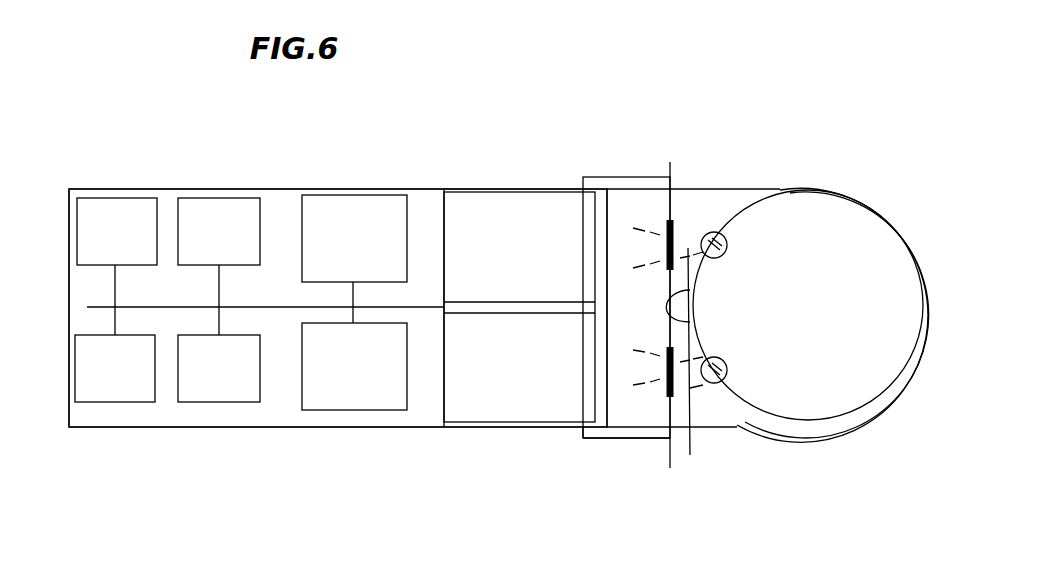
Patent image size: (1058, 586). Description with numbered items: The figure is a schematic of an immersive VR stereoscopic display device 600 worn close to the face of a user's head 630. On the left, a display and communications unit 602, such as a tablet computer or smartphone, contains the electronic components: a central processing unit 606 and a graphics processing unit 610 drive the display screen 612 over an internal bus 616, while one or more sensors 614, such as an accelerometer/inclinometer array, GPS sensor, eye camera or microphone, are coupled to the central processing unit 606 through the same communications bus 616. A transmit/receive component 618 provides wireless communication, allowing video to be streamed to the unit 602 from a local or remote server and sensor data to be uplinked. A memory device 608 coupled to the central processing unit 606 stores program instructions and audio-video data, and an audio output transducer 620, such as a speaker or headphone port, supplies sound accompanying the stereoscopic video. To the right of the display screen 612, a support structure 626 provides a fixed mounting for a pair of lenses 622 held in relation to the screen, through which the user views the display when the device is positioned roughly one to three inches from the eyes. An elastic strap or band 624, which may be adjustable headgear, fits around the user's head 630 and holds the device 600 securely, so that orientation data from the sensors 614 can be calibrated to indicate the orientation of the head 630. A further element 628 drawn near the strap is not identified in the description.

The immersive VR stereoscopic display device 600 is at (541, 84).
The display and communications unit 602 is at (145, 189).
The central processing unit 606 is at (611, 182).
The memory device 608 is at (365, 208).
The graphics processing unit 610 is at (378, 398).
The display screen 612 is at (497, 403).
The sensors 614 is at (112, 207).
The internal bus 616 is at (87, 307).
The transmit/receive component 618 is at (234, 209).
The audio output transducer 620 is at (132, 402).
The lenses 622 is at (688, 248).
The elastic strap or band 624 is at (733, 424).
The support structure 626 is at (617, 438).
The emitter rod 628 is at (671, 450).
The user's head 630 is at (783, 218).